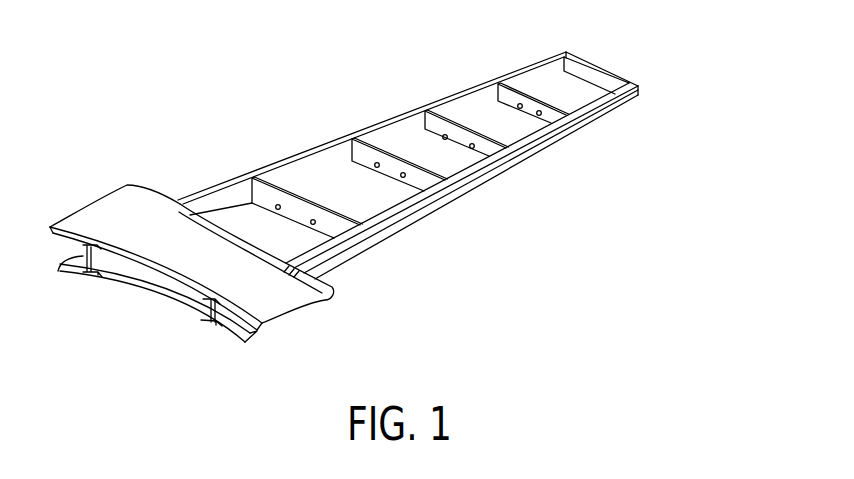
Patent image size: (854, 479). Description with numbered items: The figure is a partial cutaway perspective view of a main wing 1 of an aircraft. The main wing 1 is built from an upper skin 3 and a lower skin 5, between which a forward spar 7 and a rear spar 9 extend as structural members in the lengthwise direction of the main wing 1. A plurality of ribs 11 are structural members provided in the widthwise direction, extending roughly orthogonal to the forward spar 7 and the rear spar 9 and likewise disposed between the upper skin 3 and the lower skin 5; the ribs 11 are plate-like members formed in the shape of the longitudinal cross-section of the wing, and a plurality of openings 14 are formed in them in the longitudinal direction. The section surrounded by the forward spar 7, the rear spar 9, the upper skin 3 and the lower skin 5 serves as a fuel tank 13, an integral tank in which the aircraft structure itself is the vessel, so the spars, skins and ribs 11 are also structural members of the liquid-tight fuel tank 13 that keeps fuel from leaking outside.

The main wing 1 is at (196, 38).
The upper skin 3 is at (107, 208).
The lower skin 5 is at (153, 306).
The forward spar 7 is at (287, 158).
The rear spar 9 is at (413, 207).
The ribs 11 is at (468, 126).
The fuel tank 13 is at (441, 159).
The openings 14 is at (383, 172).